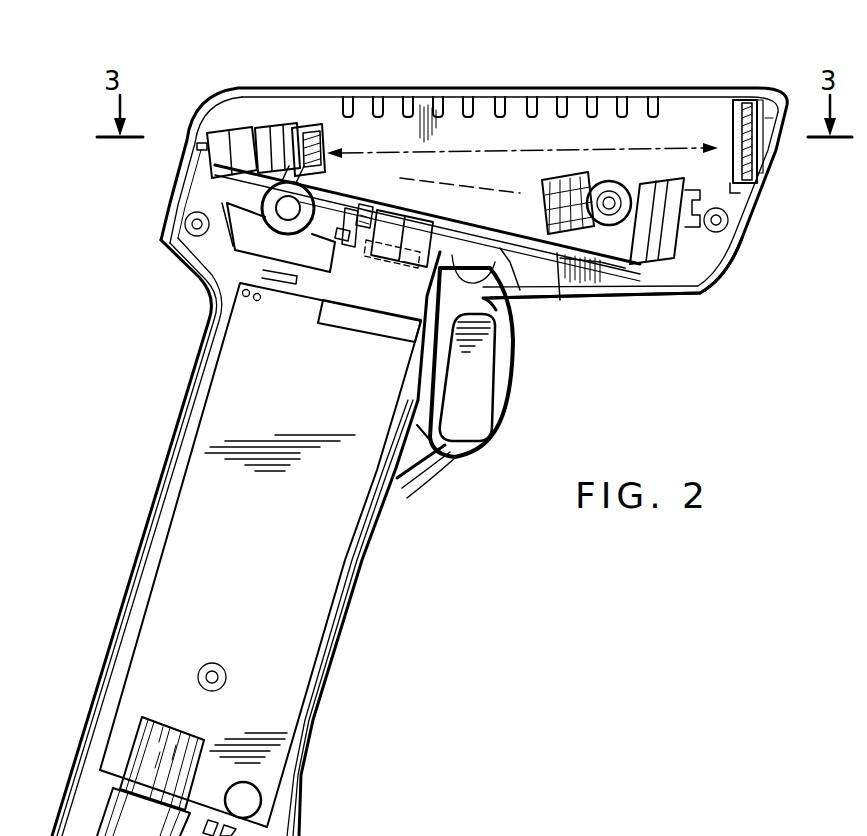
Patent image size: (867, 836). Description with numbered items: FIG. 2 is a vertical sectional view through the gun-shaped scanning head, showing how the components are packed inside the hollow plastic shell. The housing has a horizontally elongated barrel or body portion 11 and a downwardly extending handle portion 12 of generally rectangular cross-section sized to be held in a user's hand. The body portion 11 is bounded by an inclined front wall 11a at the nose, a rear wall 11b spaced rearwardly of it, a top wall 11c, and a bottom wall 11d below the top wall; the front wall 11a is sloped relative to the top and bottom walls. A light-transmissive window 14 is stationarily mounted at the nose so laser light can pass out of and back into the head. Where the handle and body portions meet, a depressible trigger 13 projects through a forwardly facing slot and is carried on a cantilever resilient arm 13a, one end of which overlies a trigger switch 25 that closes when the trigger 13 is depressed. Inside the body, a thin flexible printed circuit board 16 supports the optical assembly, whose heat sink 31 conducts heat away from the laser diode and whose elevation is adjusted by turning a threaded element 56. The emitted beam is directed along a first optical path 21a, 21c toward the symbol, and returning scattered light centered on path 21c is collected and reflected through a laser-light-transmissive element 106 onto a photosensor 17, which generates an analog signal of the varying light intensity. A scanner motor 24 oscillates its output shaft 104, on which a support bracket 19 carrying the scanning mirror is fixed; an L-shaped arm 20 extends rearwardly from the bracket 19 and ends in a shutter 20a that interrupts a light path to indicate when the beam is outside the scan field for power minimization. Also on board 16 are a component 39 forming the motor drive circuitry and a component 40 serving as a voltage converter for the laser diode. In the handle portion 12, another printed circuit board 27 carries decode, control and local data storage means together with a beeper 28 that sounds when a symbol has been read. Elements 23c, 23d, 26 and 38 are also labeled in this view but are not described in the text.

The body portion 11 is at (406, 56).
The inclined front wall 11a is at (740, 247).
The rear wall 11b is at (172, 185).
The top wall 11c is at (443, 88).
The bottom wall 11d is at (567, 300).
The handle portion 12 is at (128, 566).
The trigger 13 is at (477, 405).
The cantilever resilient arm 13a is at (424, 272).
The window 14 is at (767, 162).
The printed circuit board 16 is at (532, 297).
The photosensor 17 is at (568, 262).
The support bracket 19 is at (293, 140).
The L-shaped arm 20 is at (278, 135).
The shutter 20a is at (247, 138).
The first optical path 21a is at (508, 192).
The optical path 21c is at (687, 150).
The left bearing 23c is at (266, 206).
The right bearing 23d is at (605, 200).
The scanner motor 24 is at (243, 250).
The trigger switch 25 is at (376, 257).
The vent slots 26 is at (650, 99).
The printed circuit board 27 is at (300, 568).
The beeper 28 is at (262, 812).
The heat sink 31 is at (710, 276).
The return spring 38 is at (510, 305).
The component 39 is at (558, 300).
The voltage converter 40 is at (655, 268).
The threaded element 56 is at (738, 160).
The output shaft 104 is at (232, 258).
The laser-light-transmissive element 106 is at (543, 187).